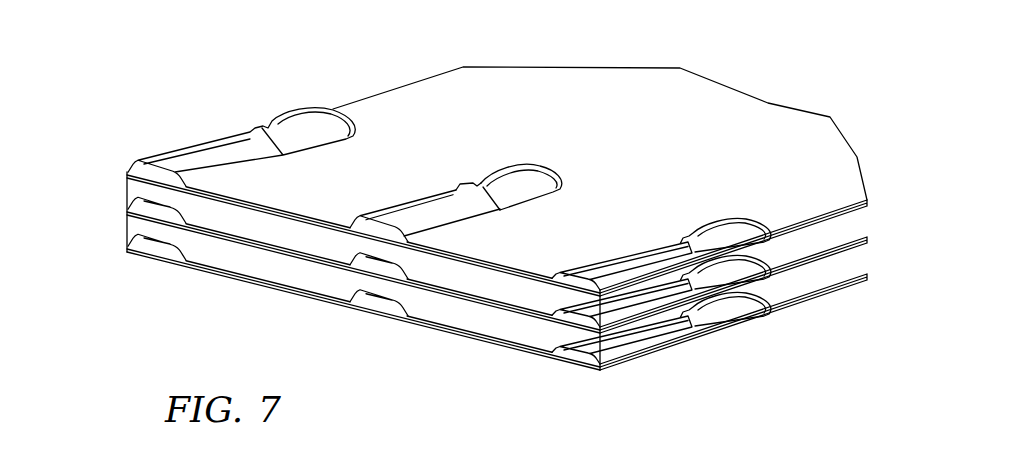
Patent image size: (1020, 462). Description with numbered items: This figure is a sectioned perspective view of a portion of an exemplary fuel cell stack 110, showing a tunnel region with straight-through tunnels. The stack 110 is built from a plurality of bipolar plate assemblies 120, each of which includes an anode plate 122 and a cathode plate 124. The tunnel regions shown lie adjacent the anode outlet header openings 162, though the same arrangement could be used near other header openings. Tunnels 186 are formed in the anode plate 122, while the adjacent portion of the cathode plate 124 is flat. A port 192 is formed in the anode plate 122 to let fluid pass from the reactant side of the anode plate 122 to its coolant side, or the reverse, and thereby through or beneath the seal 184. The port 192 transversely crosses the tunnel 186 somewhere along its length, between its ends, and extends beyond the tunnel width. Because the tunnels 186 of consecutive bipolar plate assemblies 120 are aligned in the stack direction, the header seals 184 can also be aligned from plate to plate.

The fuel cell stack 110 is at (743, 74).
The bipolar plate assembly 120 is at (128, 172).
The anode plate 122 is at (650, 168).
The cathode plate 124 is at (758, 250).
The anode outlet header opening 162 is at (263, 283).
The seal 184 is at (618, 338).
The tunnel 186 is at (430, 218).
The port 192 is at (487, 193).